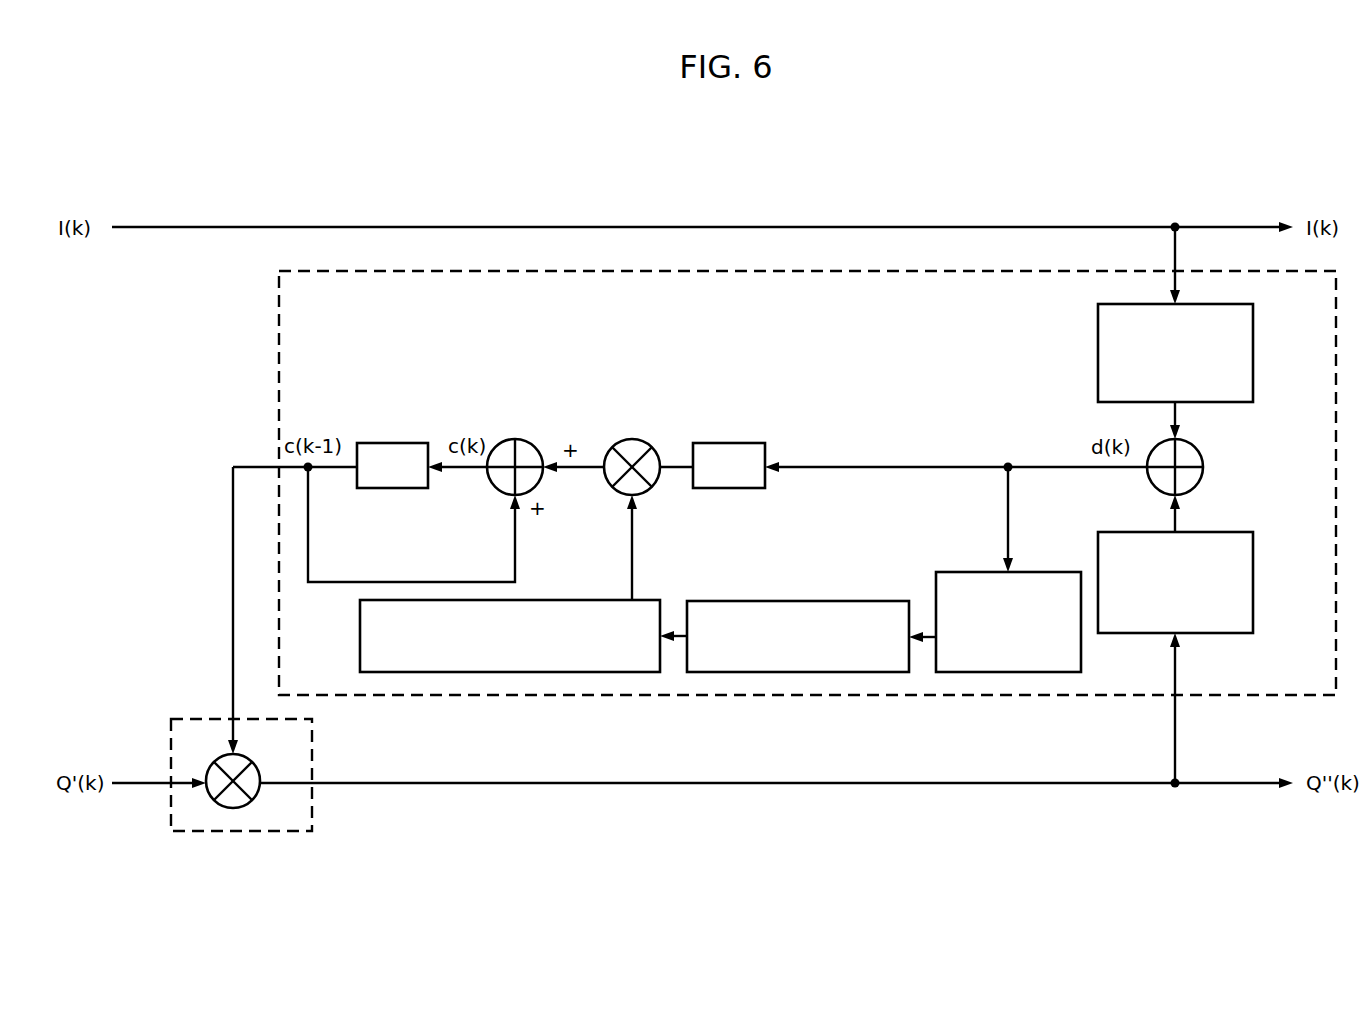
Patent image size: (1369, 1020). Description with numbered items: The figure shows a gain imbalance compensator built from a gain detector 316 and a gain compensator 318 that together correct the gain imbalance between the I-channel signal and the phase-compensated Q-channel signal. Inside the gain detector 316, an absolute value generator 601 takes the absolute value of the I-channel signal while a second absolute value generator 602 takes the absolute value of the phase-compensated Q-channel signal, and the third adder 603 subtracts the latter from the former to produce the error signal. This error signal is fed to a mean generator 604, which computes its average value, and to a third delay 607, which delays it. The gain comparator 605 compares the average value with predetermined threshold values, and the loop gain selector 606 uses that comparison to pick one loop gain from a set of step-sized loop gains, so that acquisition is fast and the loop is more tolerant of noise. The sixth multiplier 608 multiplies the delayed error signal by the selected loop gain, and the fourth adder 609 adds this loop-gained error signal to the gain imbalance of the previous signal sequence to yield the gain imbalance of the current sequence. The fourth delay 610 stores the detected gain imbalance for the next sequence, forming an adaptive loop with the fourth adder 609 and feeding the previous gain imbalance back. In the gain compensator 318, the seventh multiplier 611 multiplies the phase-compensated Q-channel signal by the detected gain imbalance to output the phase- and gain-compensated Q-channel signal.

The gain detector 316 is at (345, 271).
The gain compensator 318 is at (176, 719).
The absolute value generator 601 is at (1253, 328).
The absolute value generator 602 is at (1253, 556).
The third adder 603 is at (1196, 452).
The mean generator 604 is at (1020, 572).
The gain comparator 605 is at (850, 601).
The loop gain selector 606 is at (550, 600).
The third delay 607 is at (718, 443).
The sixth multiplier 608 is at (640, 442).
The fourth adder 609 is at (522, 441).
The fourth delay 610 is at (385, 443).
The seventh multiplier 611 is at (252, 760).